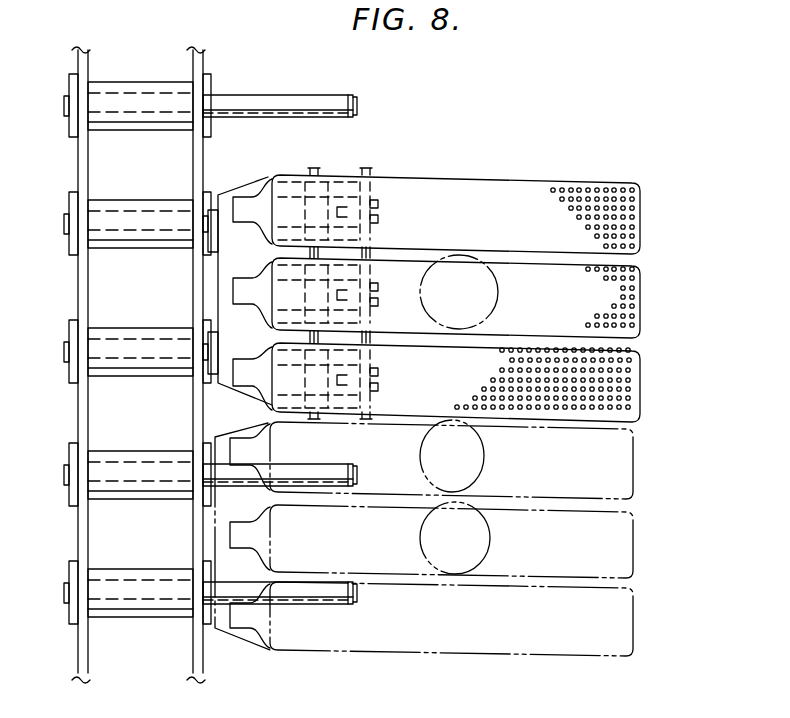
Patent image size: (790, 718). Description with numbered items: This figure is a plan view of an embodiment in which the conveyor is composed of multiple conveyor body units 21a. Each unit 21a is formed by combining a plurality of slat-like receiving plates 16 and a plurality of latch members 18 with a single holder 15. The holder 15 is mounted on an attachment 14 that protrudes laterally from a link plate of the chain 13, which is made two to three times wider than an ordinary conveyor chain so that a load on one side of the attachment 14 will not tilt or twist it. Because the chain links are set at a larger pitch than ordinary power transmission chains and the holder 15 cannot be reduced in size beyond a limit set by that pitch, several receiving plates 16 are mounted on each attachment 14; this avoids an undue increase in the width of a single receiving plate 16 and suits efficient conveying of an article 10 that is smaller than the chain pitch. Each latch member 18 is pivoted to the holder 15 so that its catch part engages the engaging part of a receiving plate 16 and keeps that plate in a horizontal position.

The article 10 is at (483, 553).
The chain 13 is at (72, 163).
The attachment 14 is at (315, 99).
The holder 15 is at (228, 262).
The slat-like receiving plate 16 is at (638, 249).
The latch member 18 is at (243, 203).
The conveyor body unit 21a is at (470, 184).